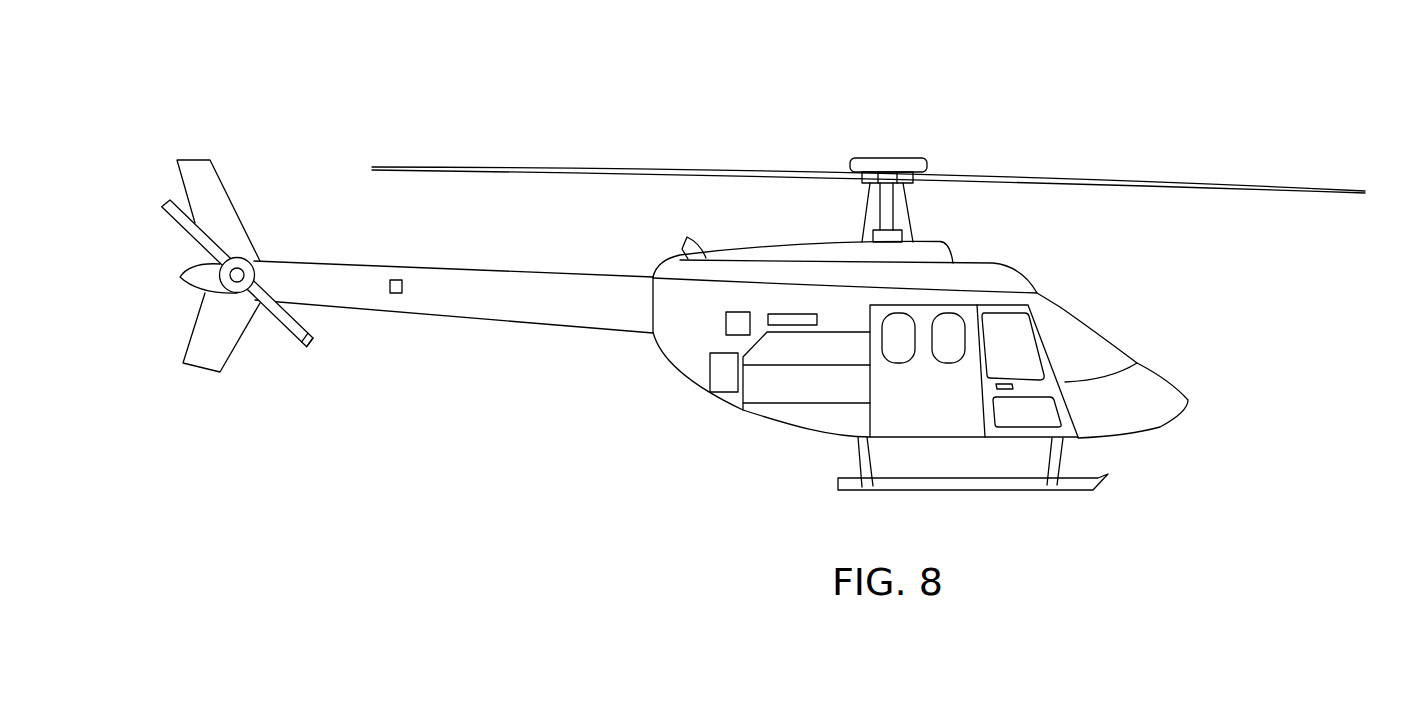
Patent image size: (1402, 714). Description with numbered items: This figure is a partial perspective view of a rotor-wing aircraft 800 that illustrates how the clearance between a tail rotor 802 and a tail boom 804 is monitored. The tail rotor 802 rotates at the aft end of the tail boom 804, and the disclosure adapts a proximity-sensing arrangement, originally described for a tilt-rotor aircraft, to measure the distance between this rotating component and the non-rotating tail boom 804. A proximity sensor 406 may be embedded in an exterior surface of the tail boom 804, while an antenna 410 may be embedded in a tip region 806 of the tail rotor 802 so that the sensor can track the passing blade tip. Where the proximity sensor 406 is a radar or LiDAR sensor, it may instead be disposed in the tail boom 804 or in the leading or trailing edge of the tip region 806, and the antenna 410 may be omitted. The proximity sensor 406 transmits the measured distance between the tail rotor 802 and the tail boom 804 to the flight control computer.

The rotor-wing aircraft 800 is at (734, 268).
The tail rotor 802 is at (242, 280).
The tail boom 804 is at (558, 328).
The tip region 806 is at (280, 328).
The proximity sensor 406 is at (395, 278).
The antenna 410 is at (311, 344).